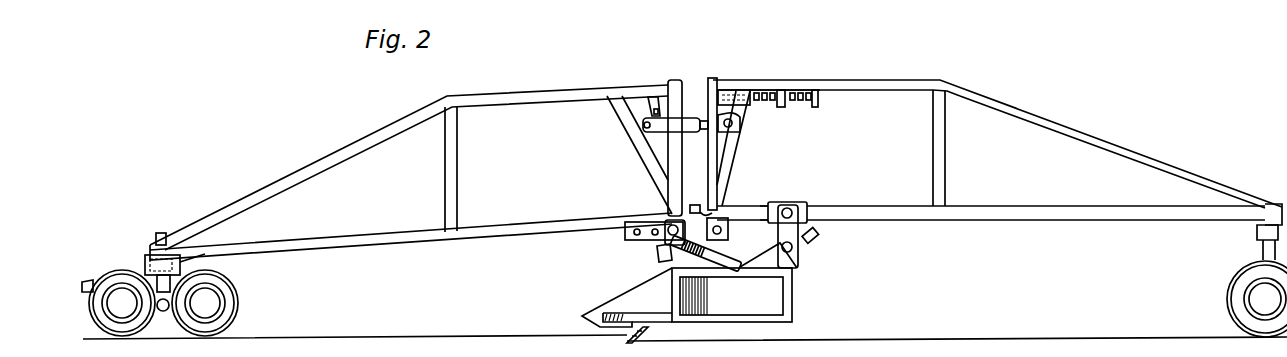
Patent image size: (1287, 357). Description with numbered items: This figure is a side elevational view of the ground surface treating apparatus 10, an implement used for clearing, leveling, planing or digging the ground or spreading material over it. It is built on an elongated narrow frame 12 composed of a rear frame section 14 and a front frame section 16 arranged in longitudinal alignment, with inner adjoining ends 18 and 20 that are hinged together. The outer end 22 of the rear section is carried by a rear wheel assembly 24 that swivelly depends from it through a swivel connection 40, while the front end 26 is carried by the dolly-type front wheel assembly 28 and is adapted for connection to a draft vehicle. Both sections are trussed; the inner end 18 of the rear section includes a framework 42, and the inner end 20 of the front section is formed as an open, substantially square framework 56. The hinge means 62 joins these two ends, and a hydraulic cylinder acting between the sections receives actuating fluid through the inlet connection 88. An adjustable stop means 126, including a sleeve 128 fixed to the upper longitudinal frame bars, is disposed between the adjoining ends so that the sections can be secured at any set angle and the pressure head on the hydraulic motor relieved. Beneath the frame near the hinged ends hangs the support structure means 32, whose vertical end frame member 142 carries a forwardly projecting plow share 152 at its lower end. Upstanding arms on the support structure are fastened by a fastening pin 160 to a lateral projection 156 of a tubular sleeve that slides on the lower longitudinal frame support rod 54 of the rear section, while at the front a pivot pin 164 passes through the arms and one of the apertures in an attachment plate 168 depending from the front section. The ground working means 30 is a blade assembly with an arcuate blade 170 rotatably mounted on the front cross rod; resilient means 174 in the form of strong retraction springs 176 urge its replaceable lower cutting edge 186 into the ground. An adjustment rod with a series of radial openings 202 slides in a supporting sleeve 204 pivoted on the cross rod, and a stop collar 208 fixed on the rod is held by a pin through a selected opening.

The ground surface treating apparatus 10 is at (962, 78).
The elongated narrow frame 12 is at (1037, 120).
The rear frame section 14 is at (836, 78).
The front frame section 16 is at (565, 93).
The inner end of rear frame section 18 is at (710, 78).
The inner end of front frame section 20 is at (670, 80).
The outer end of rear frame section 22 is at (1245, 197).
The rear wheel assembly 24 is at (1226, 282).
The front end of frame 26 is at (173, 232).
The front wheel assembly 28 is at (244, 292).
The ground working means 30 is at (606, 282).
The support structure means 32 is at (798, 283).
The swivel connection 40 is at (1242, 237).
The framework 42 is at (716, 112).
The lower longitudinal frame support rod 54 is at (872, 213).
The square framework 56 is at (660, 151).
The hinge means 62 is at (706, 202).
The inlet connection 88 is at (647, 100).
The adjustable stop means 126 is at (765, 90).
The sleeve 128 is at (758, 127).
The vertical end frame member 142 is at (788, 305).
The plow share 152 is at (592, 305).
The lateral projection 156 is at (808, 203).
The fastening pin 160 is at (789, 205).
The pivot pin 164 is at (670, 226).
The attachment plate 168 is at (617, 230).
The arcuate blade 170 is at (657, 258).
The resilient means 174 is at (736, 282).
The retraction spring 176 is at (742, 272).
The lower cutting edge 186 is at (633, 333).
The radial openings 202 is at (738, 277).
The supporting sleeve 204 is at (801, 247).
The stop collar 208 is at (817, 233).